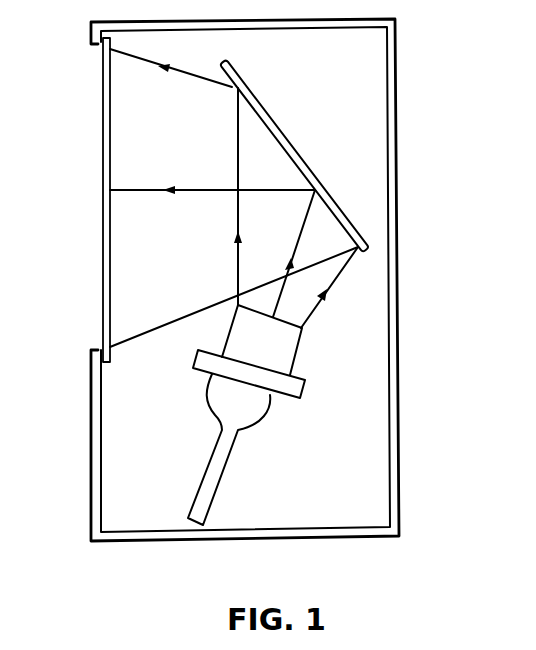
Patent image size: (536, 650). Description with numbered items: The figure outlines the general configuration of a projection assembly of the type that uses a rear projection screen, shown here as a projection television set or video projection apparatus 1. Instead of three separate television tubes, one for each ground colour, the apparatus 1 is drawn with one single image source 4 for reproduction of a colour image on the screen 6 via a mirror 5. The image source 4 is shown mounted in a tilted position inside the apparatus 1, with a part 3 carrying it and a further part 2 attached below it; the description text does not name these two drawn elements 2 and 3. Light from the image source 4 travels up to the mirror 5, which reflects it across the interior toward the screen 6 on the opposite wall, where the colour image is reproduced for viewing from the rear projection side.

The apparatus 1 is at (395, 122).
The lamp 2 is at (242, 402).
The lamp holder 3 is at (296, 388).
The image source 4 is at (277, 348).
The mirror 5 is at (305, 162).
The screen 6 is at (100, 133).